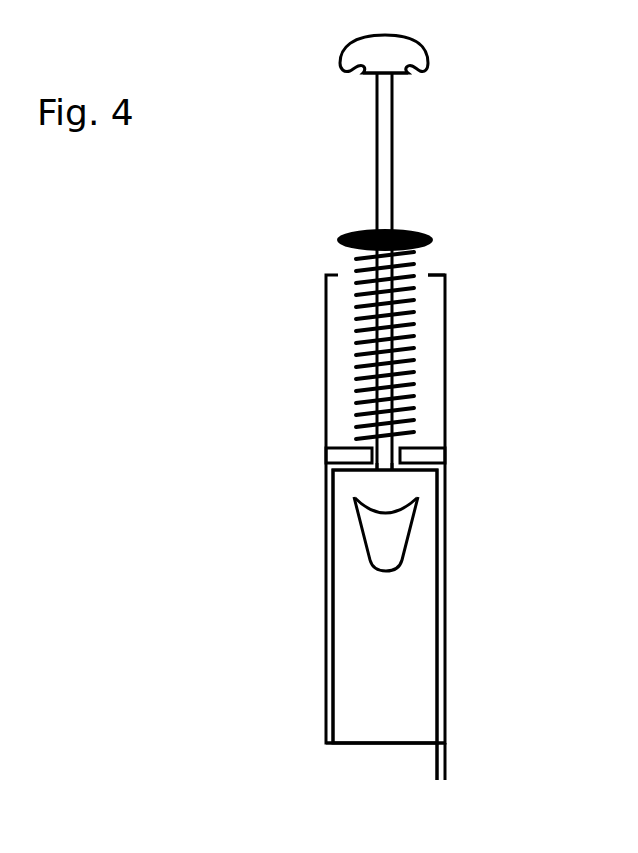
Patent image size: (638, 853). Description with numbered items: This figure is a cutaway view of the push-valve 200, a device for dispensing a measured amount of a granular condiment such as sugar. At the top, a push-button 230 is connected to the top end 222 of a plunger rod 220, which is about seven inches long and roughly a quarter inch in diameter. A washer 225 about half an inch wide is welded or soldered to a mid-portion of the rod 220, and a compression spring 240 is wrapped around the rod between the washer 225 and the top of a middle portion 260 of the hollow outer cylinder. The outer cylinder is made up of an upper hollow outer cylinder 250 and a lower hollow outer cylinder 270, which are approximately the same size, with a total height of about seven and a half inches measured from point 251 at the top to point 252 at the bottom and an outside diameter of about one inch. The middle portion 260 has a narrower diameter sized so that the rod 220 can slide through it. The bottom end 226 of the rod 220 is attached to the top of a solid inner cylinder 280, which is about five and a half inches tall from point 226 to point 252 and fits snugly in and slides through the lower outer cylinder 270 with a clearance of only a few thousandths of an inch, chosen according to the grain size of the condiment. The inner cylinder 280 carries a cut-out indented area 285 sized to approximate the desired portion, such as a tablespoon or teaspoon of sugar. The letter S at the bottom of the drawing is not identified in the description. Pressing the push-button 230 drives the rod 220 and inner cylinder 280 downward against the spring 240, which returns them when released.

The push-valve 200 is at (234, 375).
The push-button 230 is at (417, 44).
The top end 222 is at (412, 72).
The plunger rod 220 is at (393, 150).
The washer 225 is at (412, 232).
The compression spring 240 is at (415, 325).
The upper hollow outer cylinder 250 is at (445, 370).
The point 251 is at (429, 273).
The middle portion 260 is at (428, 455).
The bottom end 226 is at (386, 472).
The lower hollow outer cylinder 270 is at (445, 589).
The solid inner cylinder 280 is at (345, 616).
The cut-out indented area 285 is at (372, 533).
The point 252 is at (438, 748).
The sample S is at (437, 782).